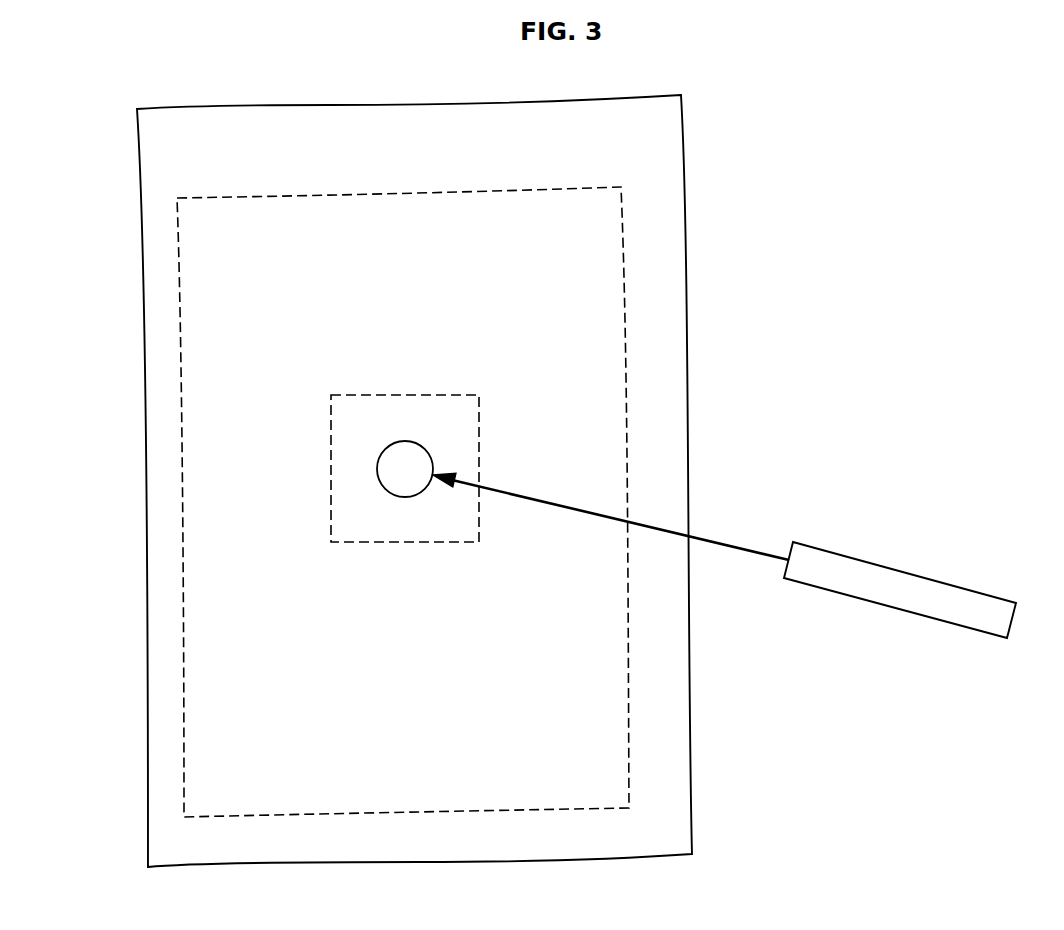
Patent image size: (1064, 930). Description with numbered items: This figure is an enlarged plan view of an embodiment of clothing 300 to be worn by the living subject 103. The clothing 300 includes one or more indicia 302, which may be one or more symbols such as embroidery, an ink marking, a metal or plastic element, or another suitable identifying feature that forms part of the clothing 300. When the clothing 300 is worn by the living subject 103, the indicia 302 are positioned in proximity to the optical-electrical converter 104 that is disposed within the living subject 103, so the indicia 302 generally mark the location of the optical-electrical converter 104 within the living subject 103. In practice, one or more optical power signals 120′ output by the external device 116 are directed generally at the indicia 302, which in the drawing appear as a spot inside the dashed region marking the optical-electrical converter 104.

The clothing 300 is at (662, 162).
The living subject 103 is at (462, 200).
The optical-electrical converter 104 is at (449, 410).
The indicia 302 is at (412, 478).
The optical power signals 120′ is at (713, 547).
The external device 116 is at (890, 572).